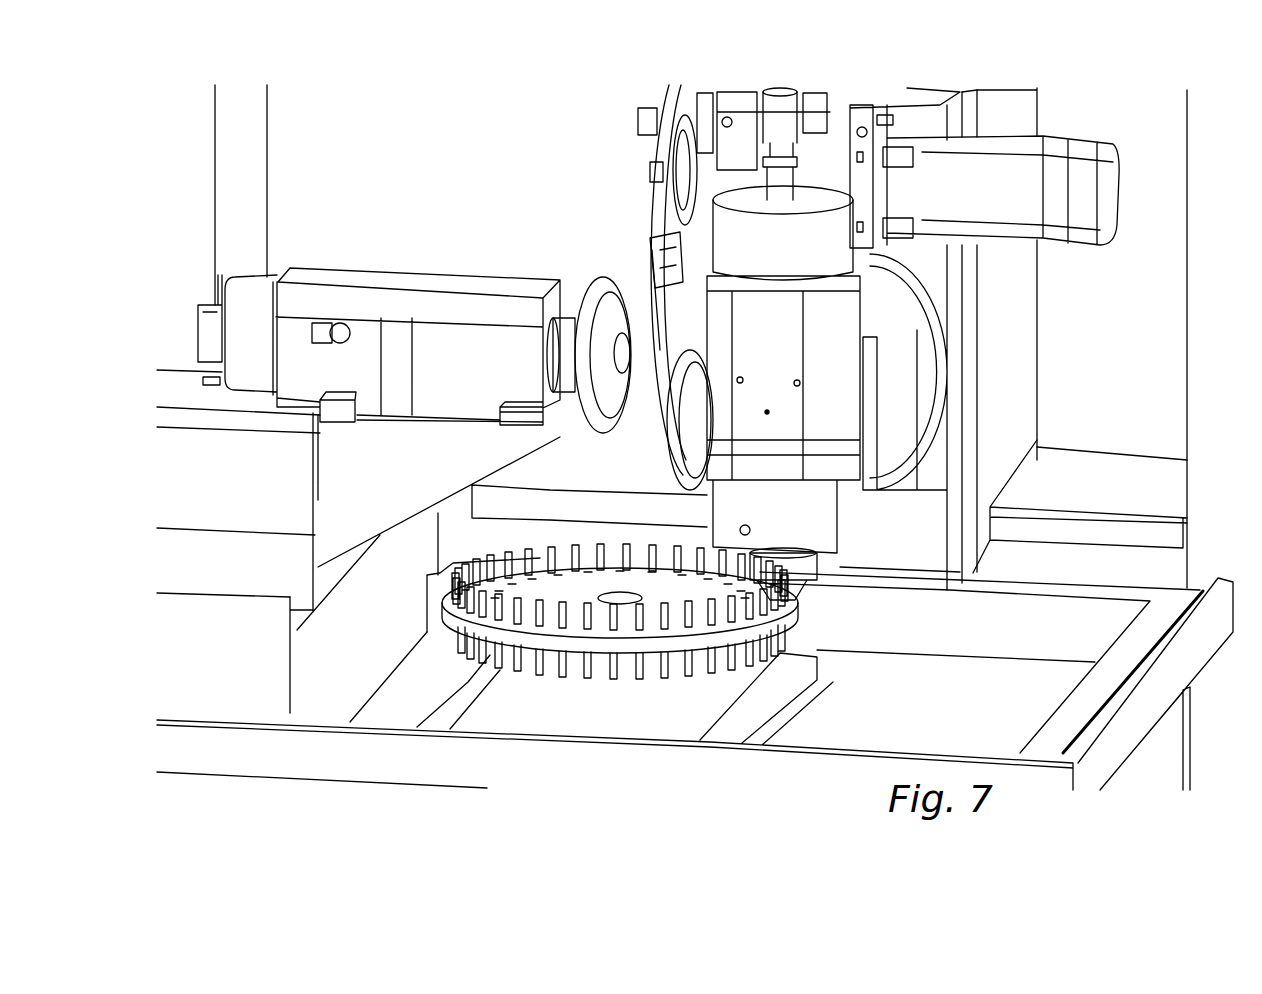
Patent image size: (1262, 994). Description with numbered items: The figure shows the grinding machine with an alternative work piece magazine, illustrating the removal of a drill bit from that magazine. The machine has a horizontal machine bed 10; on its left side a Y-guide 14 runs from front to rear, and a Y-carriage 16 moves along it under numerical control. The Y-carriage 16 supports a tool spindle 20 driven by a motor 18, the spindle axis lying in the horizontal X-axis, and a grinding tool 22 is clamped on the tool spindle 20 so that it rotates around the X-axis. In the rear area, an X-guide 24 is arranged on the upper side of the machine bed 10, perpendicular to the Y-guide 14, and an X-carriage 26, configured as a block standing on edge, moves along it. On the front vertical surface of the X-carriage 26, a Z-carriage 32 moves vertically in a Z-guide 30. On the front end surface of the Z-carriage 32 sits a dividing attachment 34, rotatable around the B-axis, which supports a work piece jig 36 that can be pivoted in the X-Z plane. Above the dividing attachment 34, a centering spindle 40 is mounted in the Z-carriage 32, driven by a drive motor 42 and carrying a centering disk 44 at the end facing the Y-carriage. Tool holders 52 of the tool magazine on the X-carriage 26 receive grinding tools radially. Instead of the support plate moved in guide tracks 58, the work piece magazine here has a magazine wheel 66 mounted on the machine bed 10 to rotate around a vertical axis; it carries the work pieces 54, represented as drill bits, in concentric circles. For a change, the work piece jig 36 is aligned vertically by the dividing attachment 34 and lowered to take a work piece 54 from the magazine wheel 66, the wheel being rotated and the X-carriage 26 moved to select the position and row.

The machine bed 10 is at (1038, 625).
The Y-guide 14 is at (172, 633).
The Y-carriage 16 is at (290, 556).
The motor 18 is at (430, 355).
The tool spindle 20 is at (592, 310).
The grinding tool 22 is at (570, 345).
The X-guide 24 is at (1015, 497).
The X-carriage 26 is at (1008, 265).
The Z-guide 30 is at (970, 386).
The Z-carriage 32 is at (953, 350).
The dividing attachment 34 is at (828, 320).
The work piece jig 36 is at (787, 612).
The centering spindle 40 is at (657, 172).
The drive motor 42 is at (948, 182).
The centering disk 44 is at (675, 140).
The tool holder 52 is at (667, 252).
The work piece 54 is at (613, 690).
The guide track 58 is at (468, 682).
The magazine wheel 66 is at (665, 592).